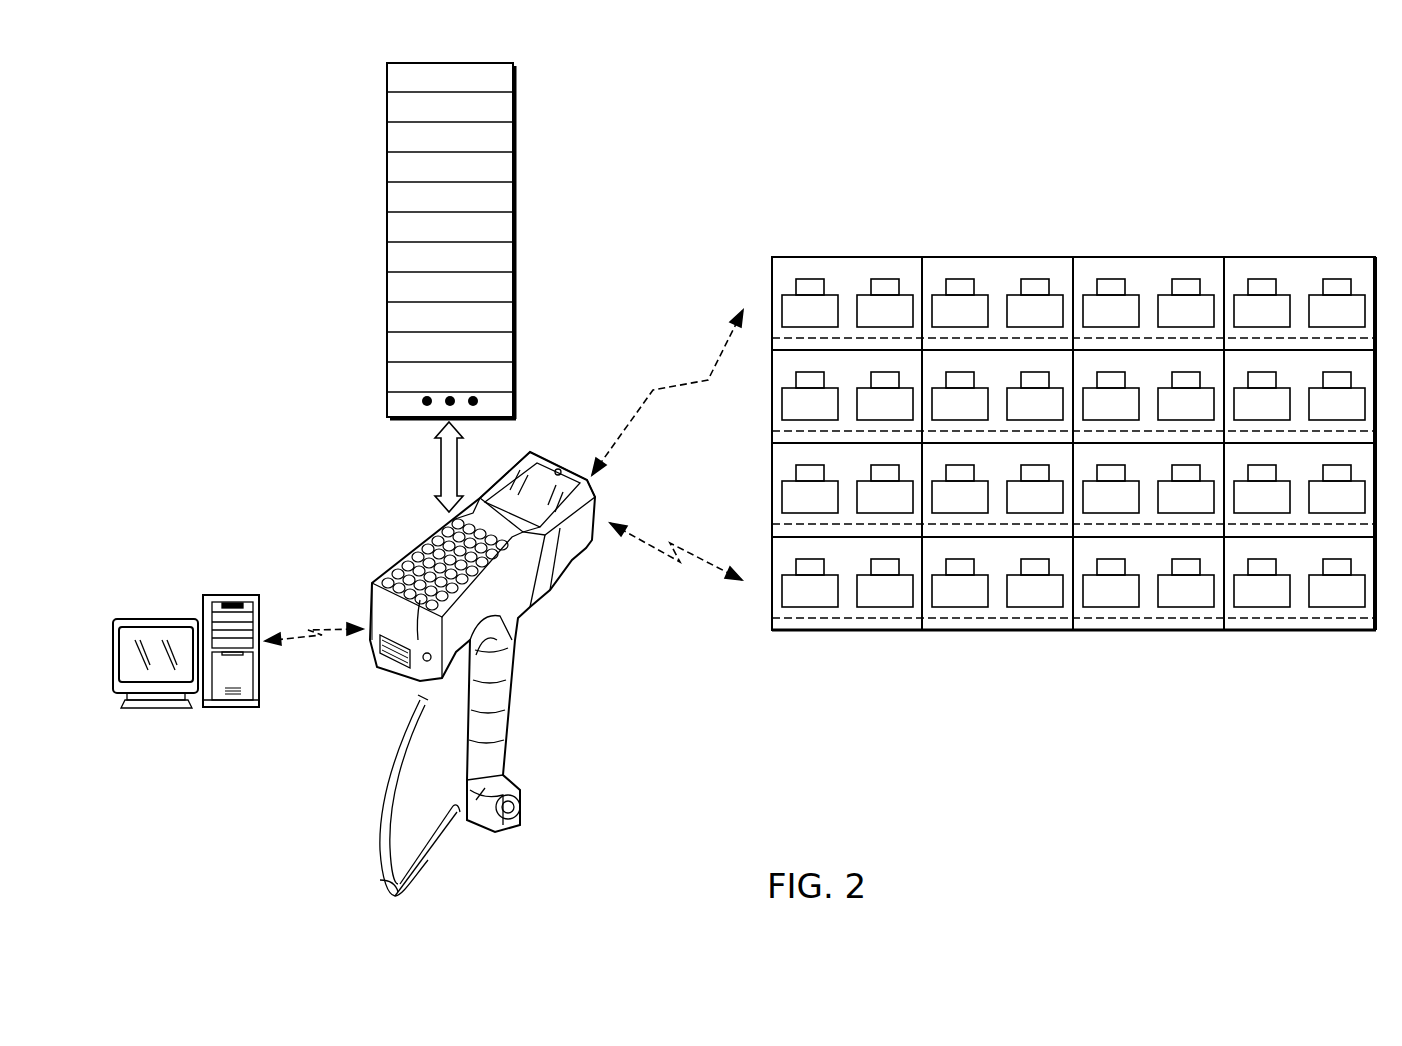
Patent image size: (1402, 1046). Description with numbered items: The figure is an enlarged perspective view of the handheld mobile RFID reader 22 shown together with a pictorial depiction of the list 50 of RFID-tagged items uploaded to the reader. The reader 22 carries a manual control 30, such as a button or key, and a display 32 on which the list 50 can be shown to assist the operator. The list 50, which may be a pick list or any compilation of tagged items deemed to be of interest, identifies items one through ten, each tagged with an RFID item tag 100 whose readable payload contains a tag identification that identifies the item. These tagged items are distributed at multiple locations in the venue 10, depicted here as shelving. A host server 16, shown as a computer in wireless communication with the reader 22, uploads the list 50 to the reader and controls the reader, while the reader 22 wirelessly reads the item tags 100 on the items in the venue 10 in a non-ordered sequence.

The venue 10 is at (1074, 478).
The host server 16 is at (298, 741).
The mobile RFID reader 22 is at (521, 658).
The manual control 30 is at (408, 558).
The display 32 is at (556, 470).
The list 50 is at (356, 162).
The RFID item tag 100 is at (1073, 420).